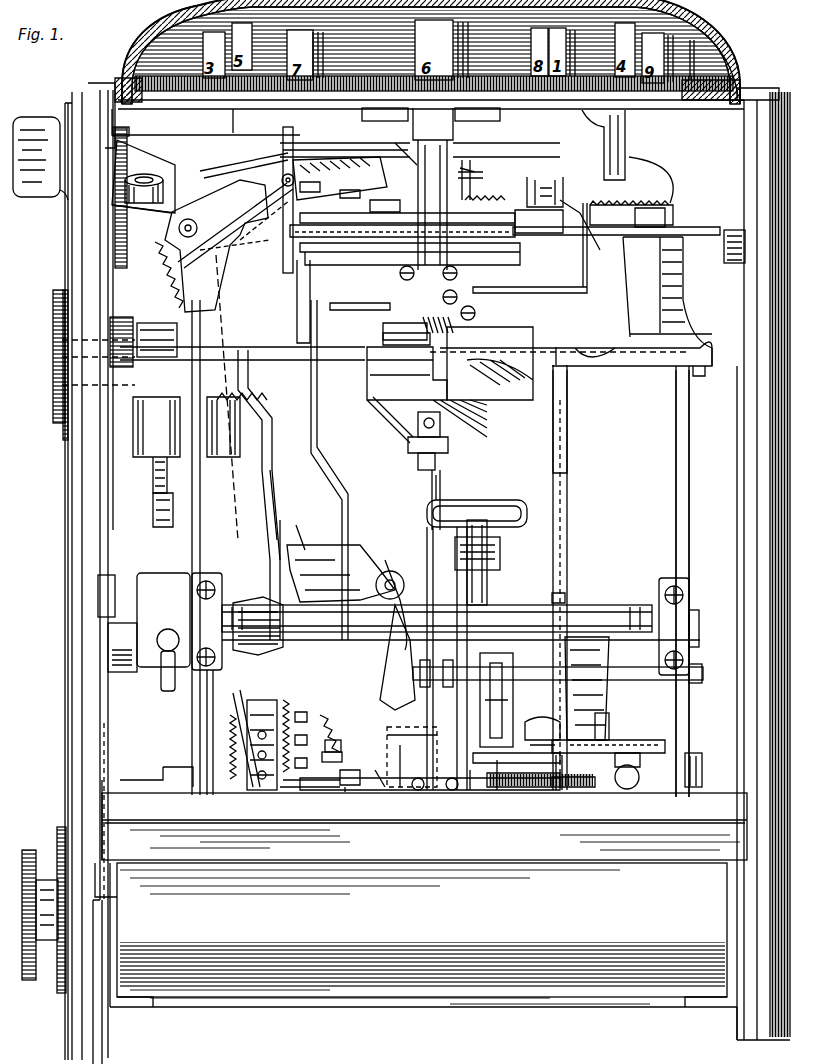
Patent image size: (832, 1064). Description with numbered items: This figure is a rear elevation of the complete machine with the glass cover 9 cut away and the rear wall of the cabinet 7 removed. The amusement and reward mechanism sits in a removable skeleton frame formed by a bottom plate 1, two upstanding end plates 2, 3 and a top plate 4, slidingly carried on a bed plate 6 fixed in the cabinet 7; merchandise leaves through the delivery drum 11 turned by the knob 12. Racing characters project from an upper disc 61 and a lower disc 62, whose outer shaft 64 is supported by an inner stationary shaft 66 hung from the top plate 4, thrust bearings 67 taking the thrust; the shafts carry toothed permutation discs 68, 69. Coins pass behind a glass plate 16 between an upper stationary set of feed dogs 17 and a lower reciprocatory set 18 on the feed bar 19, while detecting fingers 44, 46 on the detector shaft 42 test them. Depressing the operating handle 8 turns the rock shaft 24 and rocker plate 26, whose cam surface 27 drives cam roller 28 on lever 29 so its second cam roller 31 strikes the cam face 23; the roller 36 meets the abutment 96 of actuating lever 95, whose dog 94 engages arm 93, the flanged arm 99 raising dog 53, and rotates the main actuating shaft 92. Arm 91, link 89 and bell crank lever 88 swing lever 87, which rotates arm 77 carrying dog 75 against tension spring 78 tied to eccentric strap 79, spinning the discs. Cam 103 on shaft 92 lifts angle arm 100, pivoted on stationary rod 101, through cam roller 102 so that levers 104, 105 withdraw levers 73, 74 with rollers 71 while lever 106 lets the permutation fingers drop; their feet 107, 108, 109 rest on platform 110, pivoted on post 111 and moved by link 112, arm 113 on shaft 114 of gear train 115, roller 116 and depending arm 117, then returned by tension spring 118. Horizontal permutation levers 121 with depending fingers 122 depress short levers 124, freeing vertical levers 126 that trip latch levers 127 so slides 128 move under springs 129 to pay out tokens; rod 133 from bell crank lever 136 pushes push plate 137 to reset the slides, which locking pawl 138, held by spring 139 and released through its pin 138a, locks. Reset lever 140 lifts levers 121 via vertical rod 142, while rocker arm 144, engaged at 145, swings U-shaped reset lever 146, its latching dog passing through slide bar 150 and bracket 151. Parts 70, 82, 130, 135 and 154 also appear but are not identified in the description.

The glass dome 9 is at (722, 64).
The operating handle 8 is at (34, 197).
The lever 29 is at (118, 222).
The inclined upturned cam face 23 is at (146, 173).
The second cam roller 31 is at (172, 178).
The horizontal permutation levers 121 is at (287, 185).
The vertical bar 70 is at (283, 163).
The upper disc 61 is at (333, 80).
The lower disc 62 is at (357, 87).
The plate of glass 16 is at (433, 138).
The outer shaft 64 is at (417, 162).
The upper stationary set of feed dogs 17 is at (306, 172).
The depending fingers 122 is at (413, 166).
The arm 77 is at (475, 172).
The detecting finger 46 is at (541, 165).
The detecting finger 44 is at (560, 185).
The lever 74 is at (578, 196).
The levers 73 is at (665, 216).
The feed bar 19 is at (707, 205).
The toothed permutation disc 68 is at (291, 196).
The lower reciprocatory set of feed dogs 18 is at (347, 194).
The rollers 71 is at (376, 210).
The toothed permutation disc 69 is at (346, 231).
The reset lever 140 is at (352, 247).
The thrust bearings 67 is at (472, 282).
The dog 75 is at (526, 256).
The detector shaft 42 is at (712, 256).
The bell crank lever 88 is at (562, 346).
The lever 87 is at (575, 352).
The top plate 4 is at (618, 370).
The vertical rod 142 is at (332, 466).
The vertical levers 126 is at (270, 472).
The inner stationary shaft 66 is at (418, 462).
The tension spring 78 is at (428, 330).
The lever 104 is at (500, 440).
The lever 106 is at (440, 479).
The angle arm 100 is at (490, 500).
The lever 105 is at (432, 496).
The cam roller 102 is at (520, 532).
The cam 103 is at (482, 596).
The link 89 is at (566, 512).
The end plate 3 is at (675, 500).
The U-shaped reset lever 146 is at (276, 522).
The link 154 is at (300, 527).
The rocker arm 144 is at (330, 552).
The arm 91 is at (562, 590).
The main actuating shaft 92 is at (610, 612).
The cabinet 7 is at (757, 546).
The dog 53 is at (99, 592).
The flanged arm 99 is at (110, 644).
The arm 93 is at (176, 576).
The dog 94 is at (164, 531).
The actuating lever 95 is at (160, 462).
The abutment 96 is at (170, 360).
The rocker plate 26 is at (110, 506).
The cam surface 27 is at (115, 386).
The rock shaft 24 is at (90, 361).
The cam roller 28 is at (112, 334).
The roller 36 is at (156, 331).
The short horizontal levers 124 is at (180, 240).
The plate 82 is at (350, 310).
The eccentric strap 79 is at (385, 330).
The platform 110 is at (490, 655).
The stationary rod 101 is at (571, 681).
The depending arm 117 is at (601, 684).
The bell crank lever 136 is at (395, 656).
The push plate 137 is at (393, 676).
The engagement point 145 is at (295, 652).
The latch levers 127 is at (255, 731).
The springs 129 is at (291, 686).
The spring 130 is at (331, 726).
The slides 128 is at (336, 741).
The spring 139 is at (341, 752).
The post 111 is at (346, 776).
The slide bar 150 is at (391, 771).
The shaft 114 is at (570, 732).
The roller 116 is at (605, 722).
The arm 113 is at (606, 746).
The link 112 is at (602, 757).
The end plate 2 is at (190, 742).
The bottom plate 1 is at (126, 792).
The rod 133 is at (260, 792).
The plate 135 is at (285, 792).
The locking pawl 138 is at (331, 792).
The pin 138a is at (345, 792).
The bracket 151 is at (380, 792).
The foot 109 is at (420, 792).
The foot 108 is at (455, 792).
The foot 107 is at (500, 797).
The train of gears 115 is at (560, 797).
The tension spring 118 is at (641, 792).
The knob 12 is at (28, 851).
The bed plate 6 is at (280, 862).
The delivery drum 11 is at (292, 962).